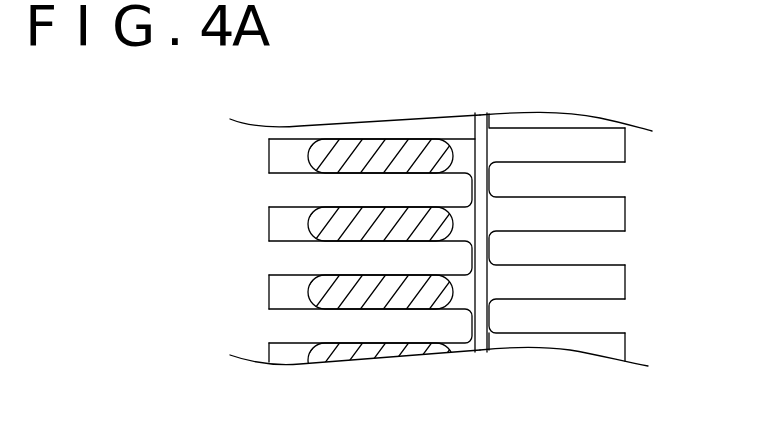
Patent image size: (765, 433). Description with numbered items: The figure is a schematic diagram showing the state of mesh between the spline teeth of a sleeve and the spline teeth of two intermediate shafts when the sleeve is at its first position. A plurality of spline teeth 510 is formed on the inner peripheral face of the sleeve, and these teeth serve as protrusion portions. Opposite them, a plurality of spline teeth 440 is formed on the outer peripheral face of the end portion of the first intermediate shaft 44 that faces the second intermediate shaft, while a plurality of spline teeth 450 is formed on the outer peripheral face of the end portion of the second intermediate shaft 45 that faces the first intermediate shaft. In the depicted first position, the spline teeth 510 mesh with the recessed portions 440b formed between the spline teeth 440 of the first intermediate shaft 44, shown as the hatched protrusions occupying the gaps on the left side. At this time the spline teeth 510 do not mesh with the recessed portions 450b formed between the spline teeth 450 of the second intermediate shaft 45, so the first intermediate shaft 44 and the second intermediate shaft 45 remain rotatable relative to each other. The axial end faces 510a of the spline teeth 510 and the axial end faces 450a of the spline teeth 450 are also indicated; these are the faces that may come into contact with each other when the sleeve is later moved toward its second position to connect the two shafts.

The first intermediate shaft 44 is at (255, 348).
The spline teeth 440 is at (352, 263).
The recessed portions 440b is at (290, 292).
The second intermediate shaft 45 is at (633, 346).
The spline teeth 450 is at (560, 250).
The axial end faces 450a is at (484, 150).
The recessed portions 450b is at (613, 208).
The spline teeth 510 is at (392, 225).
The axial end faces 510a is at (453, 157).